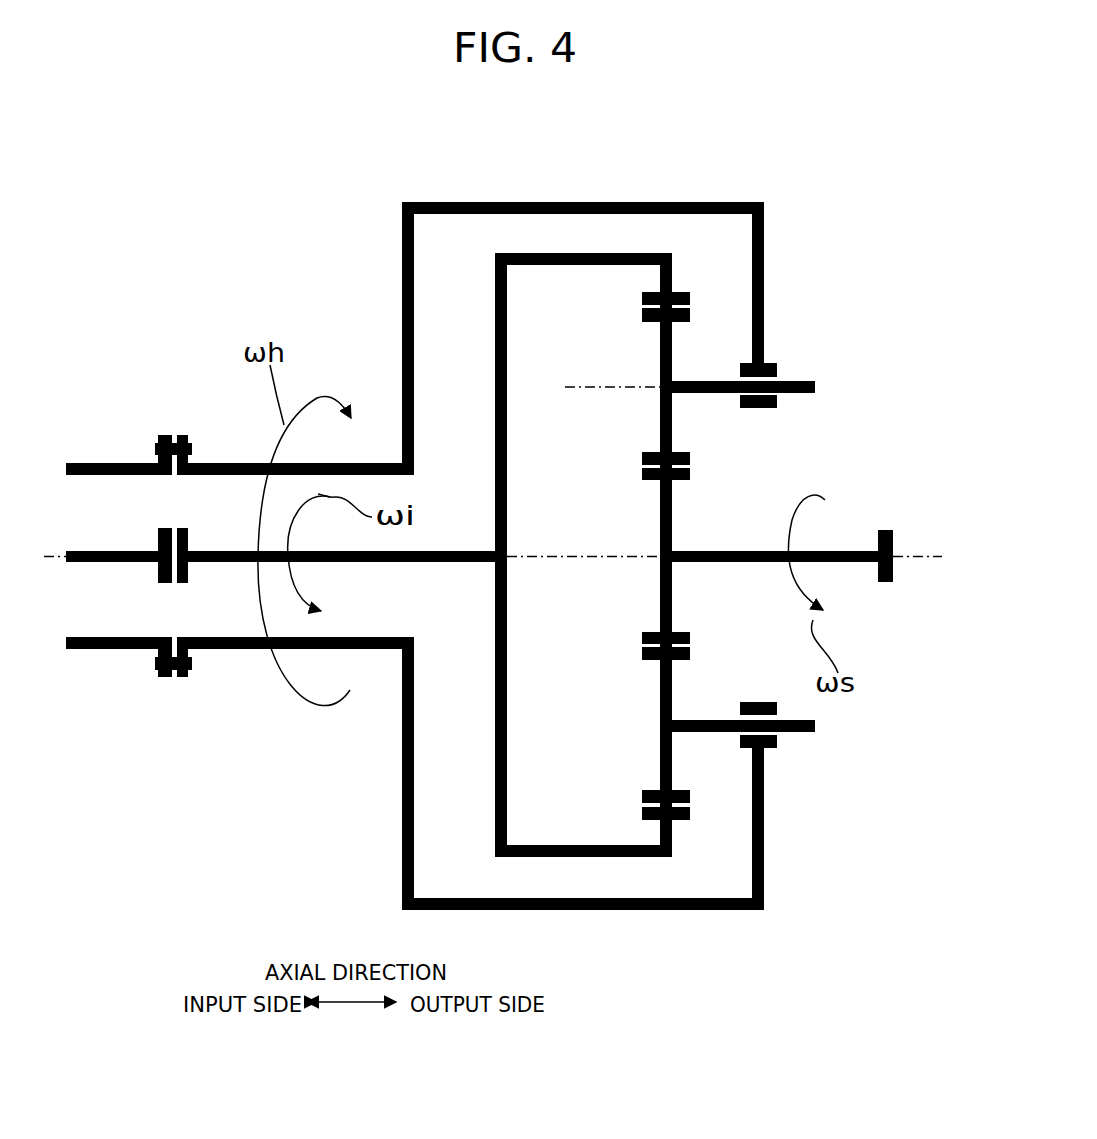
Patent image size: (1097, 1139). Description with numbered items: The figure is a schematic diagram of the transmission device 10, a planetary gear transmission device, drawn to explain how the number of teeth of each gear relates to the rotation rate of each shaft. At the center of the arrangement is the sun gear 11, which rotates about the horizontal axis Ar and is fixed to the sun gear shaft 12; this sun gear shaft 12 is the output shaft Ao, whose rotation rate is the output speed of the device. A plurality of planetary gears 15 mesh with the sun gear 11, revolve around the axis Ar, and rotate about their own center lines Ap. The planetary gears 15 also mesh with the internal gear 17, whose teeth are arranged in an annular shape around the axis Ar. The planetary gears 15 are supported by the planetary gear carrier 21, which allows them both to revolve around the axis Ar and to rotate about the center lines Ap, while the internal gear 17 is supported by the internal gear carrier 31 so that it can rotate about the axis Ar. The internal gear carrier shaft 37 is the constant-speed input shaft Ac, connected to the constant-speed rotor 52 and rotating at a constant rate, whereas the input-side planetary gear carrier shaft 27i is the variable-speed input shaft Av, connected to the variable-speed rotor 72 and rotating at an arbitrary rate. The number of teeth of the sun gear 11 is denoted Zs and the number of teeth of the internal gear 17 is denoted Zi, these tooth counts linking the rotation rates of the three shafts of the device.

The transmission device 10 is at (396, 193).
The planetary gear carrier 21 is at (475, 203).
The variable-speed rotor 72 is at (107, 463).
The input-side planetary gear carrier shaft 27i is at (215, 463).
The constant-speed rotor 52 is at (105, 562).
The sun gear shaft 12 is at (740, 550).
The internal gear carrier shaft 37 is at (387, 562).
The internal gear carrier 31 is at (627, 858).
The sun gear 11 is at (672, 498).
The internal gear 17 is at (683, 292).
The planetary gears 15 is at (672, 340).
The number of teeth of the internal gear Zi is at (642, 298).
The number of teeth of the sun gear Zs is at (642, 473).
The center line of planetary gear Ap is at (815, 387).
The axis Ar is at (928, 557).